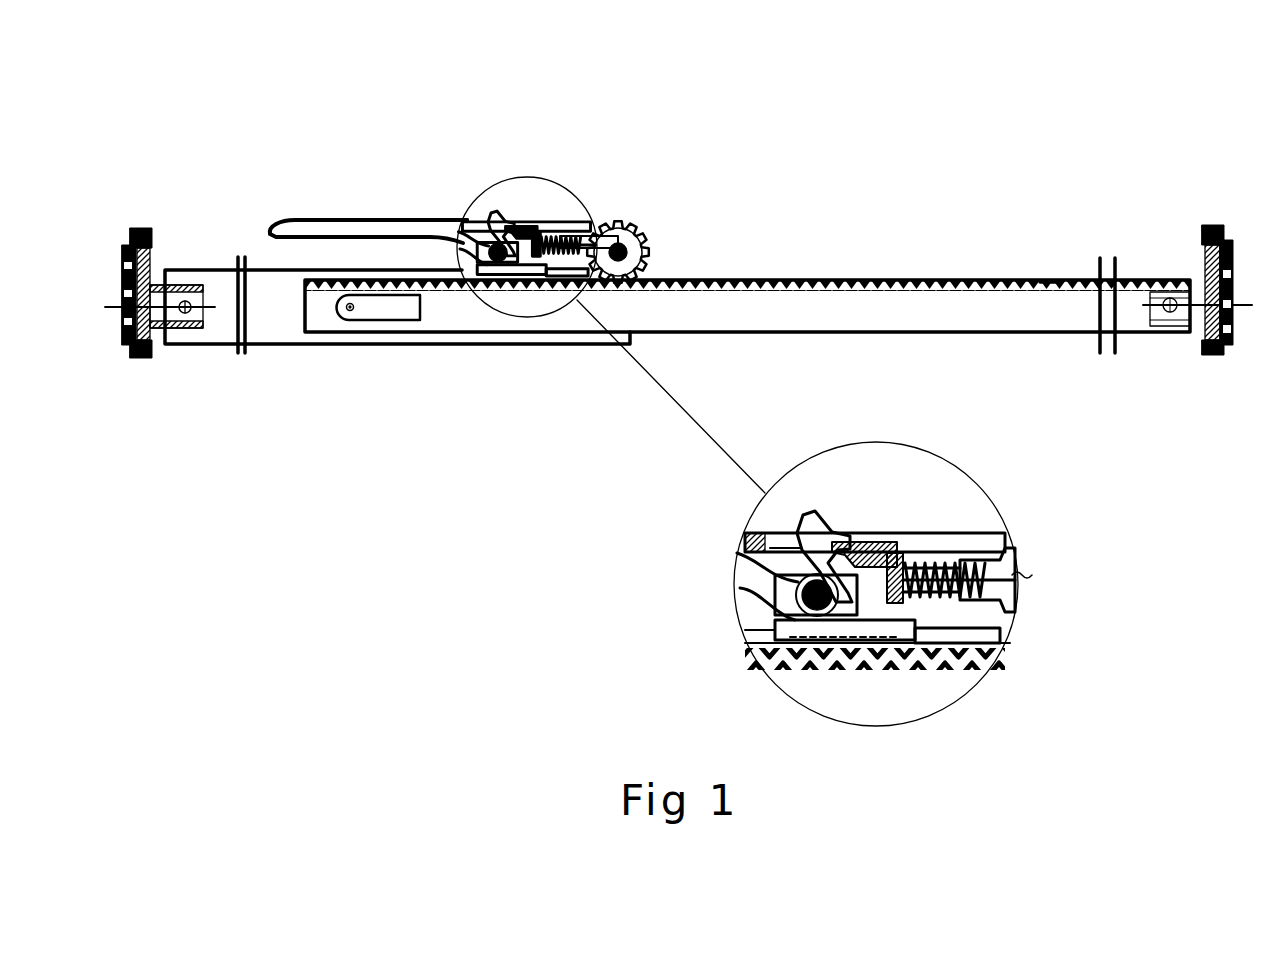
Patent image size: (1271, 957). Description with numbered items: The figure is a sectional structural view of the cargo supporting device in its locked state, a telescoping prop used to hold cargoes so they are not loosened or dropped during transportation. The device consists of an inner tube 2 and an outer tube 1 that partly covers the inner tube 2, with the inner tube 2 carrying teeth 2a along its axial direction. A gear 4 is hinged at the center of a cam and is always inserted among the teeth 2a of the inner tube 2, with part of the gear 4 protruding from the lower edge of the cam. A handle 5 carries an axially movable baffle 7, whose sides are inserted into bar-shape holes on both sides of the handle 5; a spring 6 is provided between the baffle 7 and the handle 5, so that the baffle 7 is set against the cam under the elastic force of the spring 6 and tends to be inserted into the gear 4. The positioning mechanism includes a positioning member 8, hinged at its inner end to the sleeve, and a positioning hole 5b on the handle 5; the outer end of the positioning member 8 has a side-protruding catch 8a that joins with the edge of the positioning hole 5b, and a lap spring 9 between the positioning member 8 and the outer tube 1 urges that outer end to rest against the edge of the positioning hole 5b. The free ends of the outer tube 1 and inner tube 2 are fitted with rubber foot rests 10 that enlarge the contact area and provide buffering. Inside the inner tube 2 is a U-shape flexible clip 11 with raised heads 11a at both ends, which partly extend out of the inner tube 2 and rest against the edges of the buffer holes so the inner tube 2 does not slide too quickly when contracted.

The outer tube 1 is at (263, 320).
The inner tube 2 is at (1058, 313).
The teeth 2a is at (1045, 280).
The gear 4 is at (651, 228).
The handle 5 is at (322, 226).
The positioning hole 5b is at (452, 225).
The spring 6 is at (557, 228).
The baffle 7 is at (590, 228).
The positioning member 8 is at (500, 228).
The catch 8a is at (517, 228).
The lap spring 9 is at (494, 236).
The foot rests 10 is at (142, 232).
The flexible clip 11 is at (388, 307).
The raised heads 11a is at (353, 312).